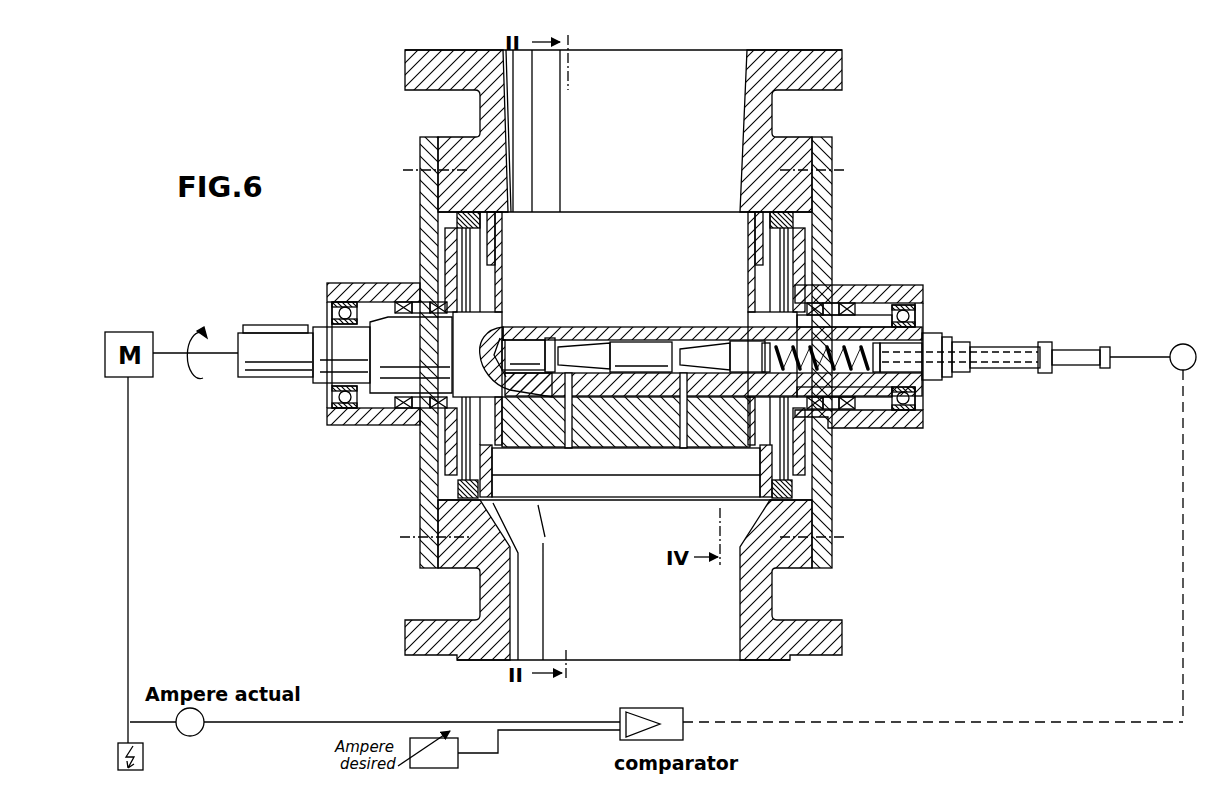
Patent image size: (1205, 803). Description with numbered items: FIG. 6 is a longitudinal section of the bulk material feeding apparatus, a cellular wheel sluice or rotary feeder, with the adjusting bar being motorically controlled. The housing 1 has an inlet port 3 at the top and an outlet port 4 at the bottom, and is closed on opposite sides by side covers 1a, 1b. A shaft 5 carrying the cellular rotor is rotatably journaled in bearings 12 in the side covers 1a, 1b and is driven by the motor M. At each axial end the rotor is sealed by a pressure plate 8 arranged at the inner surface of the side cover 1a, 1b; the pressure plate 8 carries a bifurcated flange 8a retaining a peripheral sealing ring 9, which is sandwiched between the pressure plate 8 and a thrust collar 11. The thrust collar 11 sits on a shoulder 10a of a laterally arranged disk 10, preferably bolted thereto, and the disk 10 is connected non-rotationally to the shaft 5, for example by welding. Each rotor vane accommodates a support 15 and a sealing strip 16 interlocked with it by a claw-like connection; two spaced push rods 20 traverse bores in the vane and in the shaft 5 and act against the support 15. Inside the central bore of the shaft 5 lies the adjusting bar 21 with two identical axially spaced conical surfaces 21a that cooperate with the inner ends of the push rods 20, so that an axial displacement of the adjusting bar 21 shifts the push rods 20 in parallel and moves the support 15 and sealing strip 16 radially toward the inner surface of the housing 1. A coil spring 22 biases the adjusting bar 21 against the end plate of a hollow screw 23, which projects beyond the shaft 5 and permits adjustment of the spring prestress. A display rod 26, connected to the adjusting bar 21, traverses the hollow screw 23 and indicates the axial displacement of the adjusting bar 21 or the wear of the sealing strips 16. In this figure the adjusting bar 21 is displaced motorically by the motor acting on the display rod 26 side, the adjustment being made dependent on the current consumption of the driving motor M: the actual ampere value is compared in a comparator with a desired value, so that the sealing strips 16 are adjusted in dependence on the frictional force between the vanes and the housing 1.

The housing 1 is at (478, 118).
The side cover 1a is at (420, 150).
The side cover 1b is at (832, 150).
The inlet port 3 is at (602, 70).
The outlet port 4 is at (603, 666).
The shaft 5 is at (395, 372).
The pressure plate 8 is at (450, 262).
The bifurcated flange 8a is at (458, 488).
The sealing ring 9 is at (462, 220).
The disk 10 is at (497, 300).
The shoulder 10a is at (490, 272).
The thrust collar 11 is at (480, 218).
The bearings 12 is at (905, 420).
The support 15 is at (650, 465).
The sealing strip 16 is at (550, 497).
The push rods 20 is at (582, 452).
The adjusting bar 21 is at (642, 348).
The conical surfaces 21a is at (708, 348).
The coil spring 22 is at (842, 344).
The hollow screw 23 is at (1005, 347).
The display rod 26 is at (1076, 350).